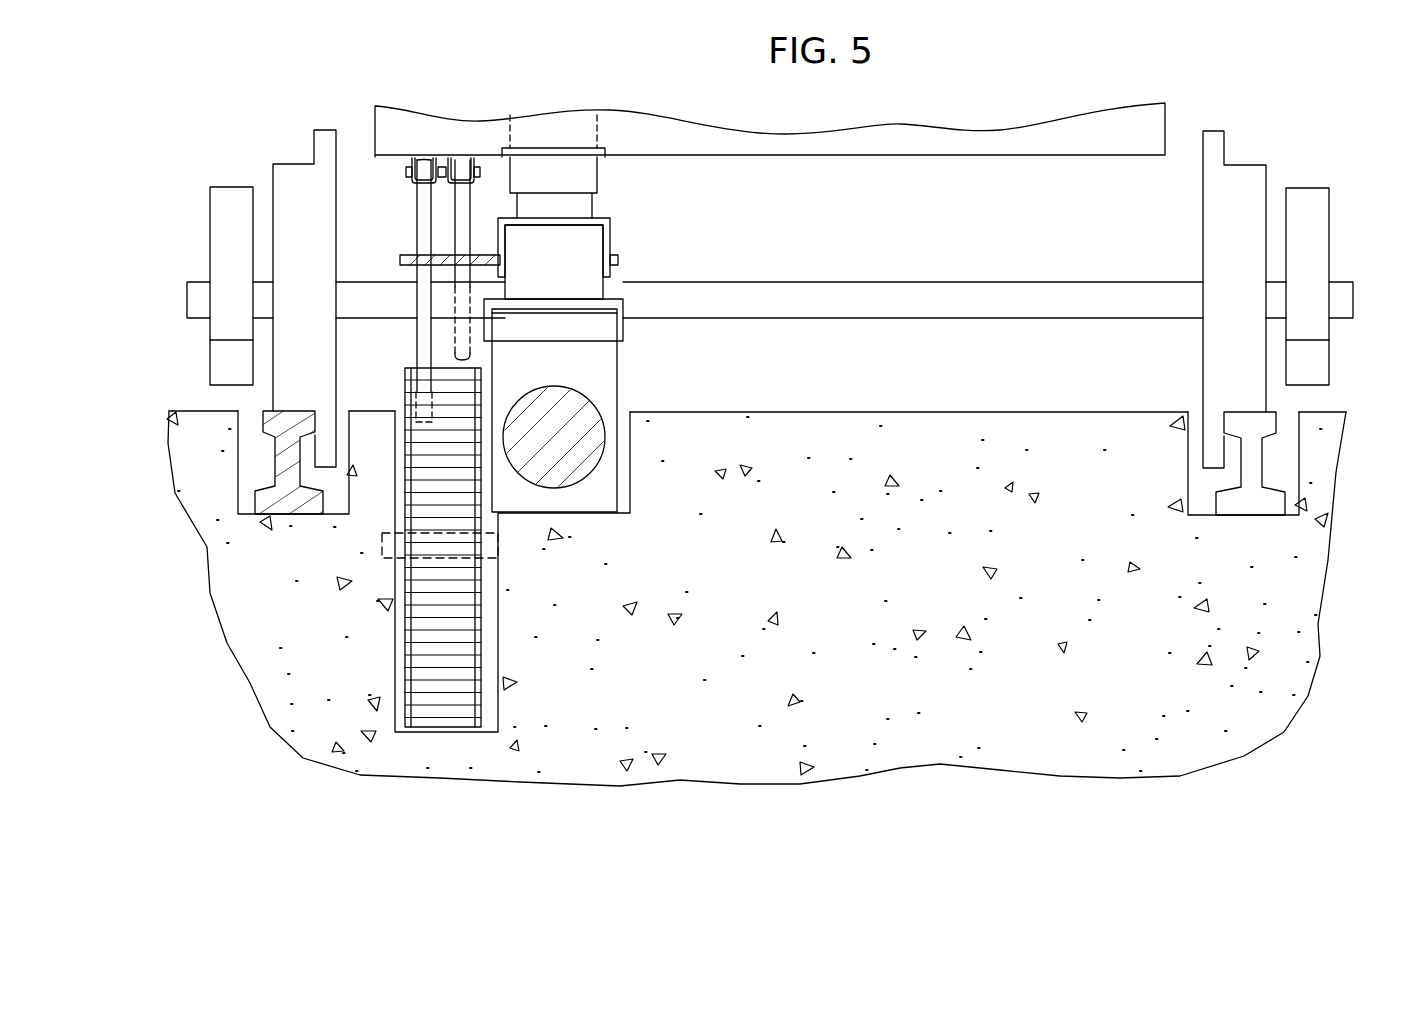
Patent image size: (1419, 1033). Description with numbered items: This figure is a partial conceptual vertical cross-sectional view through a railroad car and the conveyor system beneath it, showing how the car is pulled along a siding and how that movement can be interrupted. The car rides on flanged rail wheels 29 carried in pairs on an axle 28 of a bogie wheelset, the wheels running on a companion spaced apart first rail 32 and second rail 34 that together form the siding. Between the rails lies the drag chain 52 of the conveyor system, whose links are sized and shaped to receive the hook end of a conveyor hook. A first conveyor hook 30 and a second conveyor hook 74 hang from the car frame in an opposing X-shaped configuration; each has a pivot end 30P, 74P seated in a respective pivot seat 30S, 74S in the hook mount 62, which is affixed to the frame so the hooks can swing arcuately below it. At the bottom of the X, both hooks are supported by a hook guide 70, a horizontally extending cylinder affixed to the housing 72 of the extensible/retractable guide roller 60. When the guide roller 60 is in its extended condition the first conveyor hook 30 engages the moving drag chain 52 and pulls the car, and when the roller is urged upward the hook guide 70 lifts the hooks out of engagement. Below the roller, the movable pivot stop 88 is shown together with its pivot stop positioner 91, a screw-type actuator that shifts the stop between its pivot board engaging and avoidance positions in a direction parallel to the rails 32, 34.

The axle 28 is at (190, 302).
The flanged rail wheel 29 is at (314, 146).
The first conveyor hook 30 is at (417, 230).
The pivot seat 30S is at (406, 170).
The pivot end 30P is at (412, 178).
The first rail 32 is at (276, 469).
The second rail 34 is at (1262, 460).
The drag chain 52 is at (400, 677).
The extensible/retractable guide roller 60 is at (573, 285).
The hook mount 62 is at (412, 158).
The hook guide 70 is at (400, 260).
The housing 72 is at (611, 231).
The second conveyor hook 74 is at (470, 238).
The pivot seat 74S is at (480, 168).
The pivot end 74P is at (475, 182).
The movable pivot stop 88 is at (618, 373).
The pivot stop positioner 91 is at (580, 417).